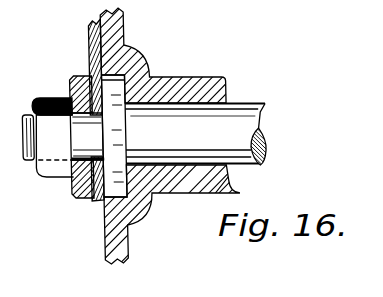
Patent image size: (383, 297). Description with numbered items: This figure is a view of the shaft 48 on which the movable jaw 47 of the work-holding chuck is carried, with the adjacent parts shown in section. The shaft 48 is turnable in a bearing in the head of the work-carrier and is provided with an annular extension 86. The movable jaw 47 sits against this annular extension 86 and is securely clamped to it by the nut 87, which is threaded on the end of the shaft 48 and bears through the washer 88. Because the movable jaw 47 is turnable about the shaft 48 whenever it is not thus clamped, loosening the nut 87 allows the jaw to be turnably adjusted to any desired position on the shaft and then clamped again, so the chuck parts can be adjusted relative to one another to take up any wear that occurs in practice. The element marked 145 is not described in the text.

The wall 145 is at (132, 22).
The movable jaw 47 is at (88, 30).
The annular extension 86 is at (115, 148).
The shaft 48 is at (230, 148).
The washer 88 is at (79, 197).
The nut 87 is at (54, 167).